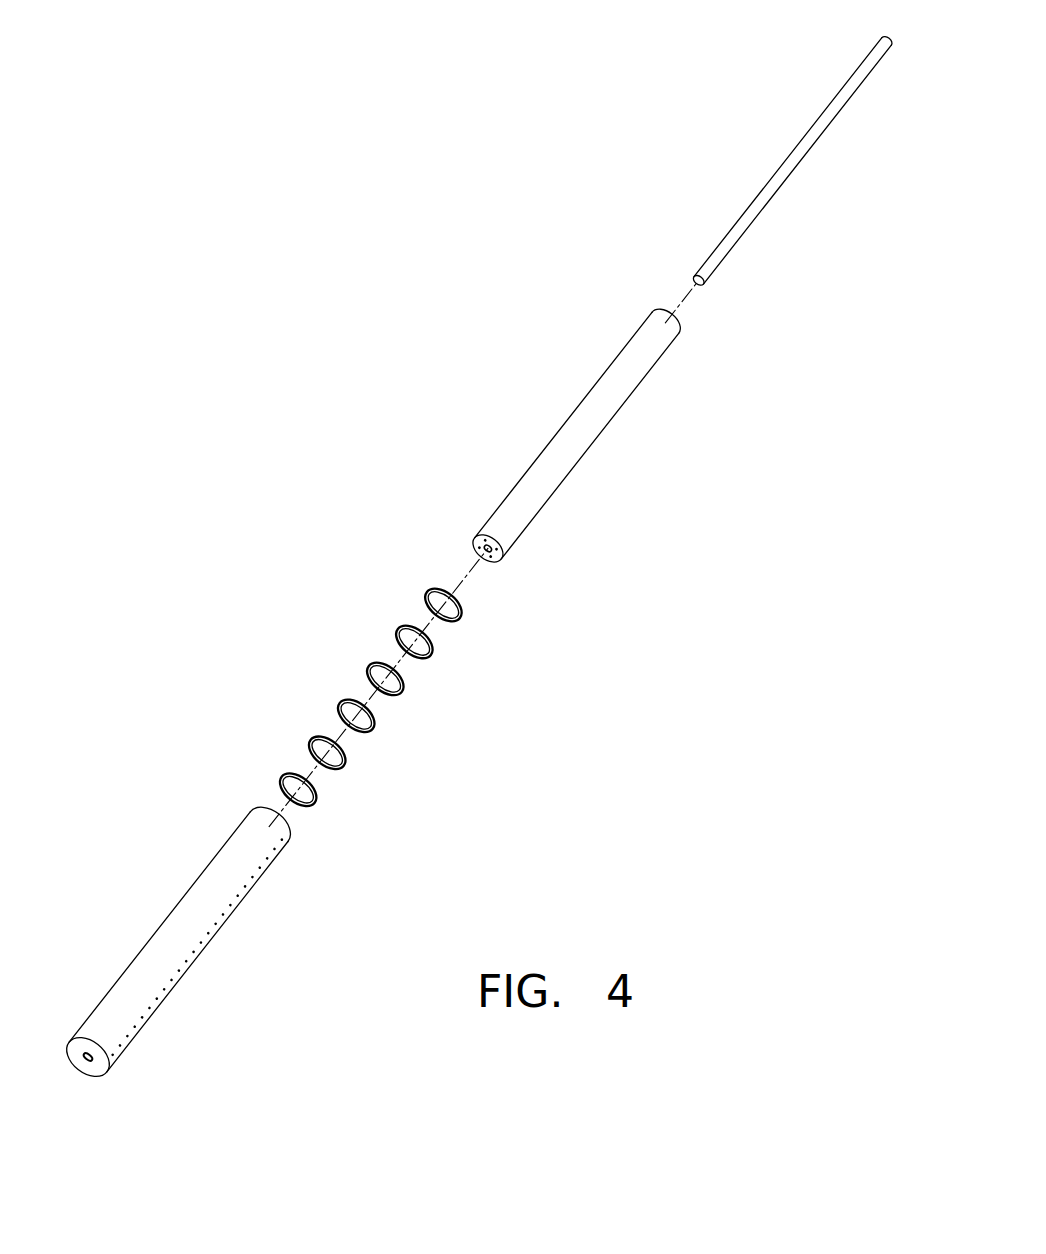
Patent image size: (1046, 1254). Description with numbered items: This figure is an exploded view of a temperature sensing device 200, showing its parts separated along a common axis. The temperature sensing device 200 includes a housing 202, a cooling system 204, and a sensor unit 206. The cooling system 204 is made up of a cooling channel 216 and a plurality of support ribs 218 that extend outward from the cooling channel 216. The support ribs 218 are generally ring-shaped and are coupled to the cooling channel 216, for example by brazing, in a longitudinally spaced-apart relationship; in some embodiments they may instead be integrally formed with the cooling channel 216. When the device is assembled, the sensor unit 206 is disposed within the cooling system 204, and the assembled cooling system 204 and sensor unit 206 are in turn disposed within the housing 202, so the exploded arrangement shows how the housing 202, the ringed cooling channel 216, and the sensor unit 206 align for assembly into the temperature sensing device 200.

The temperature sensing device 200 is at (302, 332).
The housing 202 is at (183, 877).
The cooling system 204 is at (484, 553).
The sensor unit 206 is at (737, 167).
The cooling channel 216 is at (575, 467).
The support ribs 218 is at (375, 727).